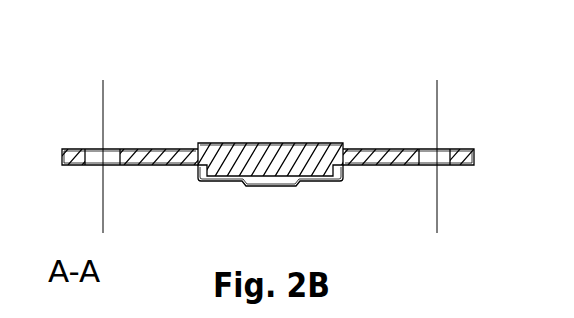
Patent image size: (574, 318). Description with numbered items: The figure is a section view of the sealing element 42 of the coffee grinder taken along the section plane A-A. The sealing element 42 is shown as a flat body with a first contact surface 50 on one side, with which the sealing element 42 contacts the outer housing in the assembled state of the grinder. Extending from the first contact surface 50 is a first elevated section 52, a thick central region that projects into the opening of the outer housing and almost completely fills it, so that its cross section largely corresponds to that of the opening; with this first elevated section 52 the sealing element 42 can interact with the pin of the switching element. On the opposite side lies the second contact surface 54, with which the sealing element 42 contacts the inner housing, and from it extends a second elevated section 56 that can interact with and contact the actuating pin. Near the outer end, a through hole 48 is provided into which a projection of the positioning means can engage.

The sealing element 42 is at (393, 79).
The first contact surface 50 is at (168, 148).
The first elevated section 52 is at (305, 143).
The second contact surface 54 is at (378, 167).
The second elevated section 56 is at (317, 181).
The through holes 48 is at (451, 166).